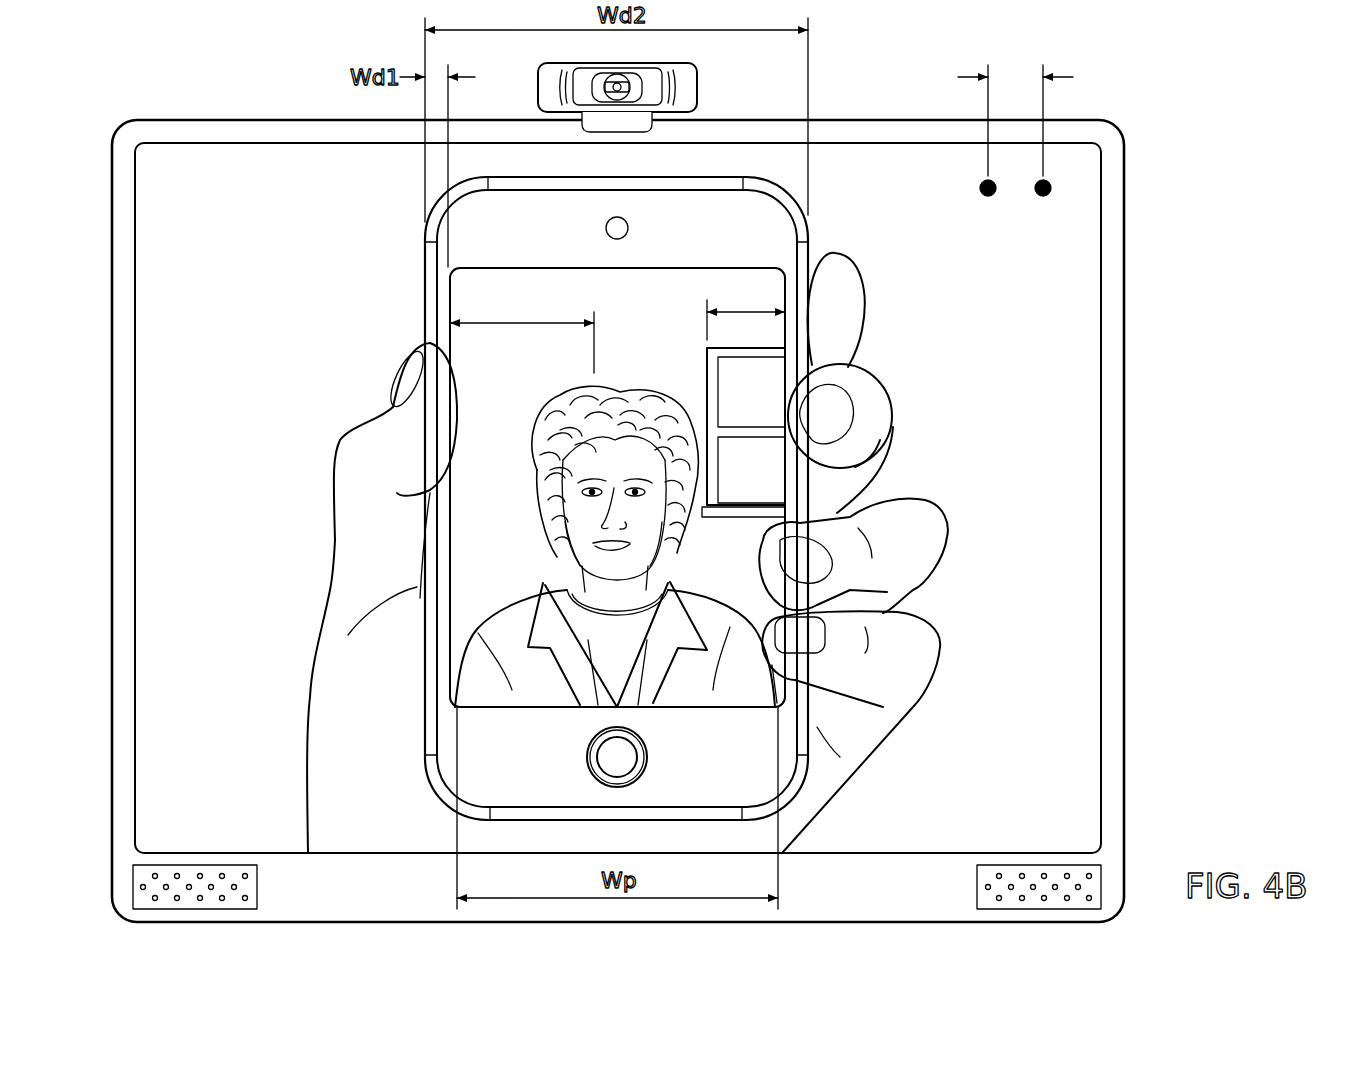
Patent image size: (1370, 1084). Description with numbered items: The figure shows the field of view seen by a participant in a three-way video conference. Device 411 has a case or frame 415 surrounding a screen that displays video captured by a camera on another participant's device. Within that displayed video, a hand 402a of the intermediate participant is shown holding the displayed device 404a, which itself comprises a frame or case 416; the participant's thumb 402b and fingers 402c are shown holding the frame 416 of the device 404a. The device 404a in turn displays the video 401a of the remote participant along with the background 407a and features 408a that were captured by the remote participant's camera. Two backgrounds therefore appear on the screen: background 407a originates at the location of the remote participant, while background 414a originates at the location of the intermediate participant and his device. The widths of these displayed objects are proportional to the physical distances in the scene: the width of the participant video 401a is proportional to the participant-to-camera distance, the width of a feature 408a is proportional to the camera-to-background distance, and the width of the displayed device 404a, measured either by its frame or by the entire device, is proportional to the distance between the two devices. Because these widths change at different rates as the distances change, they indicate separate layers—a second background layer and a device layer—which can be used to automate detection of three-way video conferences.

The video of participant 401a is at (512, 603).
The hand 402a is at (303, 706).
The thumb 402b is at (333, 468).
The fingers 402c is at (893, 417).
The displayed device 404a is at (420, 287).
The background 407a is at (680, 352).
The features 408a is at (735, 520).
The device 411 is at (1132, 442).
The background 414a is at (1040, 517).
The case or frame 415 is at (1115, 618).
The frame or case 416 is at (432, 694).